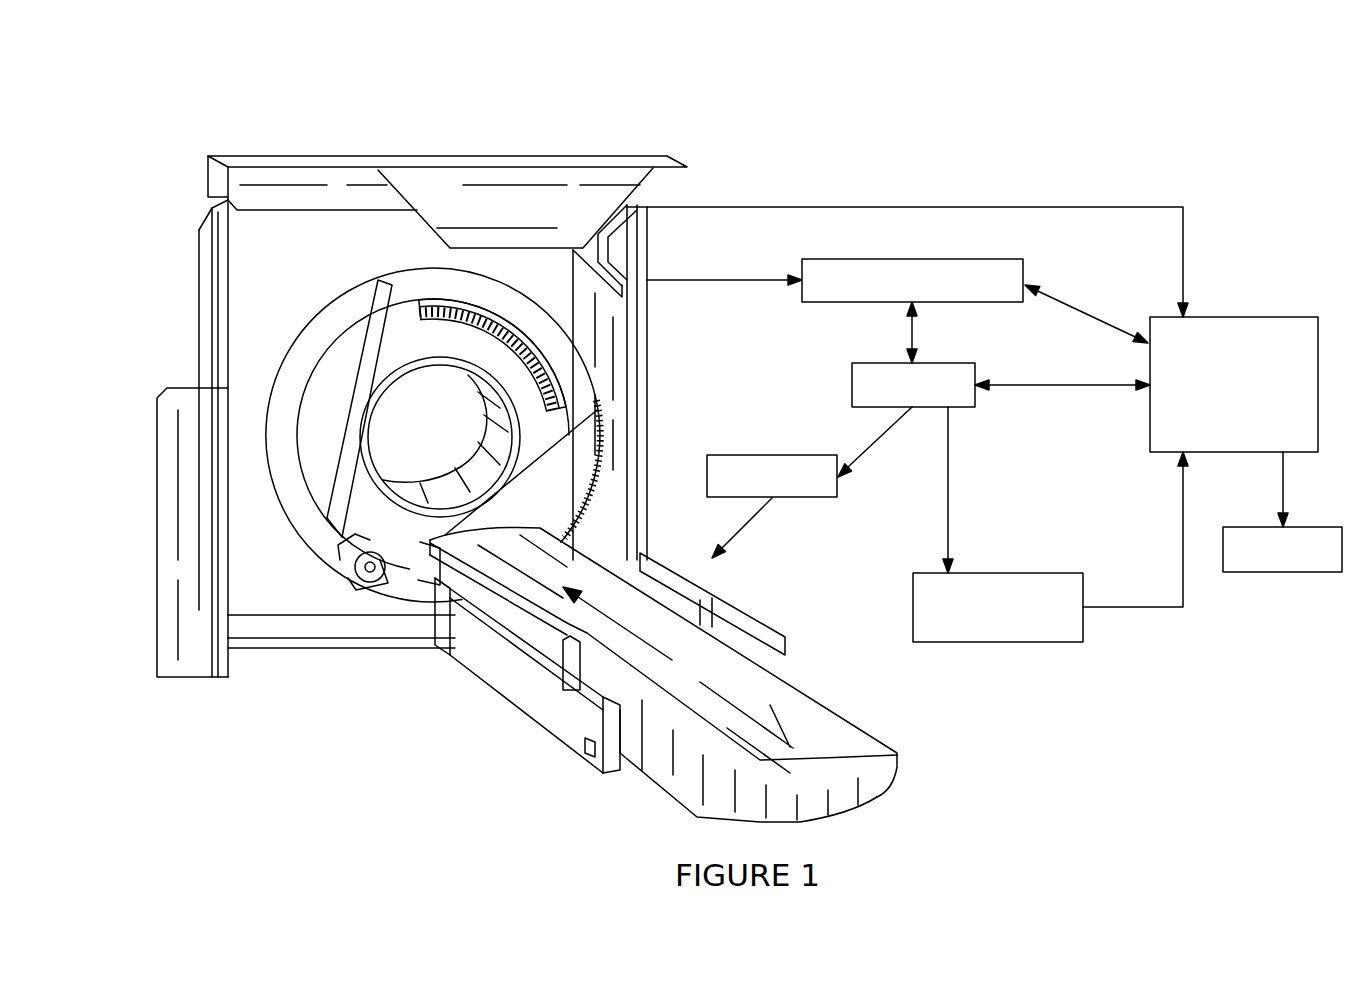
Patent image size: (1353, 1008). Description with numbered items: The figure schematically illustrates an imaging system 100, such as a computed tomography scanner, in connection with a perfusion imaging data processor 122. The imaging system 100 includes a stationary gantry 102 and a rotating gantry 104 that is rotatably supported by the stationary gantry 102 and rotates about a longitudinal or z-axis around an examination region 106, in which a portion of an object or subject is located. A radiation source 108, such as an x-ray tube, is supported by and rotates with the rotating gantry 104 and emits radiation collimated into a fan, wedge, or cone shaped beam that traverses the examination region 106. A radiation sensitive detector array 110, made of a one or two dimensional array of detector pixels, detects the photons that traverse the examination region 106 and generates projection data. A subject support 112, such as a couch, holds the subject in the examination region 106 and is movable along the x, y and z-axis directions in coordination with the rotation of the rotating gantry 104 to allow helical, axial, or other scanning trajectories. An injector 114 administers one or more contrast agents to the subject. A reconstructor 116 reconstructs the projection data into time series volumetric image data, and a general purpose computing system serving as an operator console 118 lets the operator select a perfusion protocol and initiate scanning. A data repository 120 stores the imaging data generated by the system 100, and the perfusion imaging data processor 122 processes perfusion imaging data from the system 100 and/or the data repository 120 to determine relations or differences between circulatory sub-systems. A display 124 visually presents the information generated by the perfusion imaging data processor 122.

The imaging system 100 is at (235, 78).
The stationary gantry 102 is at (222, 291).
The rotating gantry 104 is at (397, 342).
The examination region 106 is at (442, 450).
The radiation source 108 is at (367, 573).
The radiation sensitive detector array 110 is at (553, 366).
The subject support 112 is at (825, 728).
The injector 114 is at (772, 455).
The reconstructor 116 is at (913, 258).
The operator console 118 is at (852, 380).
The data repository 120 is at (998, 645).
The perfusion imaging data processor 122 is at (1233, 317).
The display 124 is at (1285, 572).